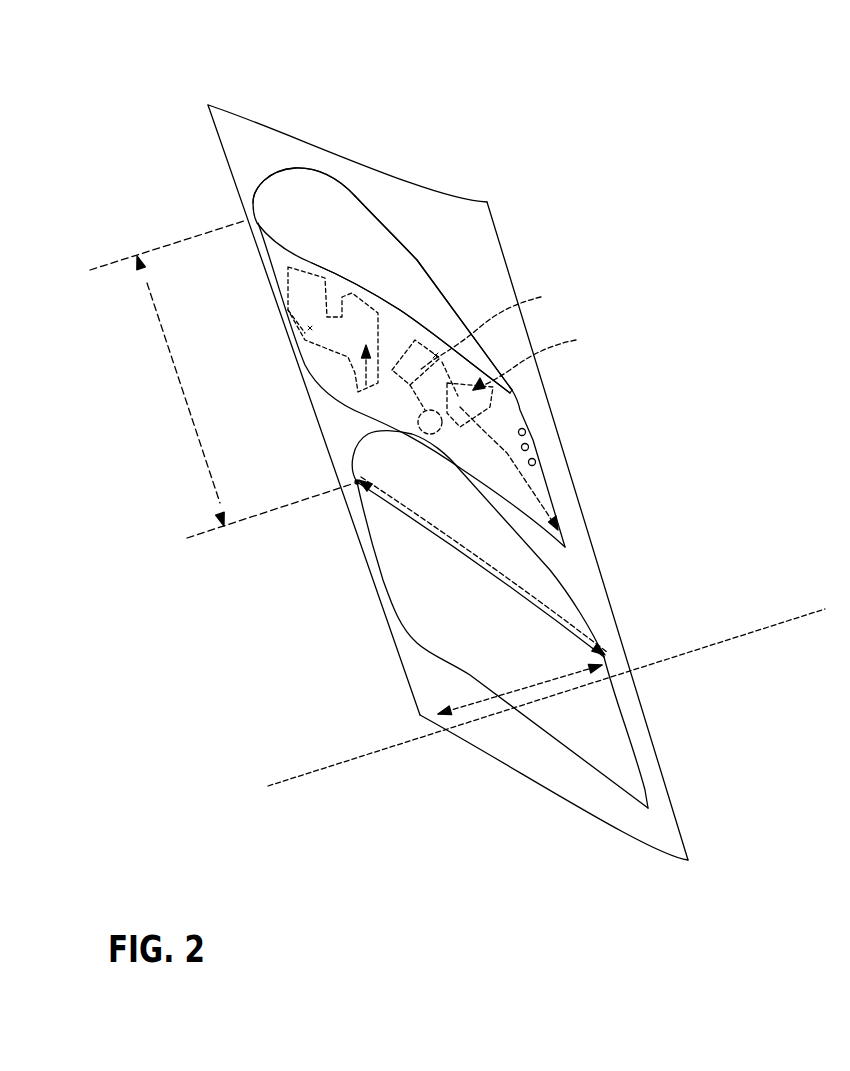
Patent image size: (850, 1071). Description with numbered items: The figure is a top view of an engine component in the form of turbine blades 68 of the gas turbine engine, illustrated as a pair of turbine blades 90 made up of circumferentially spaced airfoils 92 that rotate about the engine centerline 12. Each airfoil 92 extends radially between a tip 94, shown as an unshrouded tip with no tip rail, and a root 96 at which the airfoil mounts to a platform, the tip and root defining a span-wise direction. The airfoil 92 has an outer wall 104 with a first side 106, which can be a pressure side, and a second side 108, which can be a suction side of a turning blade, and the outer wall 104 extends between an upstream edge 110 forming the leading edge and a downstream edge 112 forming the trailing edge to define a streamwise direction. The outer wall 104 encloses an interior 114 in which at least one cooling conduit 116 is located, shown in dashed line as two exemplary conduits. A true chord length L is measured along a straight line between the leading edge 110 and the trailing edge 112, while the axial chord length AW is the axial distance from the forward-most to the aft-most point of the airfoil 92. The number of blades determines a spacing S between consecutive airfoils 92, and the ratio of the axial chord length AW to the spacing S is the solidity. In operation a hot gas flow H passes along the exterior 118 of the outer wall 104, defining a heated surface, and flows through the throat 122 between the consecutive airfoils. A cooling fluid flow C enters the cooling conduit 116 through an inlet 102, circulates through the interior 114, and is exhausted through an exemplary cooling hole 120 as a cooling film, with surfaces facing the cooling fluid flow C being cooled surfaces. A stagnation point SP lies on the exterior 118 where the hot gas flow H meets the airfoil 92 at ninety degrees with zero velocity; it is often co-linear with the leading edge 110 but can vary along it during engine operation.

The centerline 12 is at (743, 630).
The turbine blades 68 is at (336, 175).
The pair of turbine blades 90 is at (236, 61).
The airfoil 92 is at (324, 236).
The tip 94 is at (398, 263).
The root 96 is at (583, 753).
The inlet 102 is at (518, 381).
The outer wall 104 is at (597, 651).
The first side 106 is at (425, 328).
The second side 108 is at (436, 281).
The upstream edge 110 is at (252, 200).
The downstream edge 112 is at (529, 428).
The interior 114 is at (495, 408).
The cooling conduit 116 is at (540, 359).
The exterior 118 is at (494, 636).
The cooling hole 120 is at (540, 458).
The throat 122 is at (345, 420).
The spacing S is at (221, 379).
The stagnation point SP is at (353, 483).
The hot gas flow H is at (388, 547).
The true chord length L is at (483, 566).
The cooling fluid flow C is at (366, 355).
The axial chord length AW is at (520, 683).